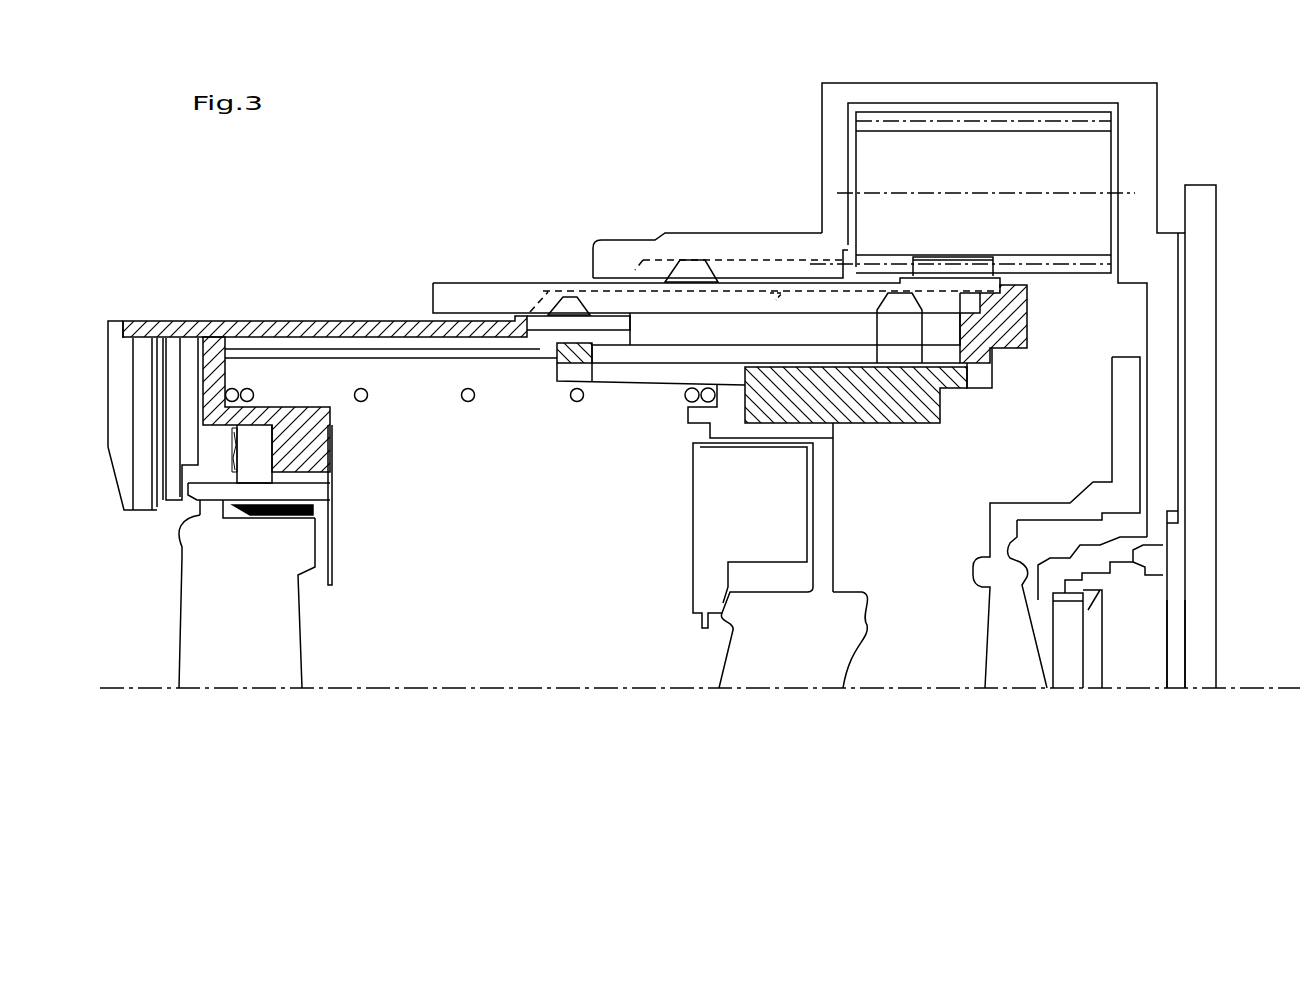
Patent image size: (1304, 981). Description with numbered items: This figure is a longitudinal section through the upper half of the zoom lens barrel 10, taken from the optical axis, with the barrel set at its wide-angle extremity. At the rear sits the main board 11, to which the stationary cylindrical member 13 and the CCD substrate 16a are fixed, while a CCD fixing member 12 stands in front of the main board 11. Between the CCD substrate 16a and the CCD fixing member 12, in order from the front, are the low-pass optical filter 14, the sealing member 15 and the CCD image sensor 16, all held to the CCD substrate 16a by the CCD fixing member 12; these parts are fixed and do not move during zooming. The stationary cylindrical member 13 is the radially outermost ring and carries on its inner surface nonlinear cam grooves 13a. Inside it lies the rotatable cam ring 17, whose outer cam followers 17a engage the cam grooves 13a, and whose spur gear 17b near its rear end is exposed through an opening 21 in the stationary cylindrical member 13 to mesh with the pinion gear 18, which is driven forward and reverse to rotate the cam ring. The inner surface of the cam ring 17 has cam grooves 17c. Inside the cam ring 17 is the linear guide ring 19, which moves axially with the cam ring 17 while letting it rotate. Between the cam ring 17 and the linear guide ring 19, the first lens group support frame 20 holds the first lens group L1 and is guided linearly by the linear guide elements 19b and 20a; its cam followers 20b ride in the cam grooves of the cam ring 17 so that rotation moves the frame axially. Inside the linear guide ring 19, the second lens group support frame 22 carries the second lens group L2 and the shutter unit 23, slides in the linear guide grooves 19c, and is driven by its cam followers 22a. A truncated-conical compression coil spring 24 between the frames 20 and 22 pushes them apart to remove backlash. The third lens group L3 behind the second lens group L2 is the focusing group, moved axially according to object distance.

The zoom lens barrel 10 is at (173, 208).
The main board 11 is at (1210, 515).
The CCD fixing member 12 is at (1188, 368).
The stationary cylindrical member 13 is at (612, 257).
The nonlinear cam groove 13a is at (657, 258).
The low-pass optical filter 14 is at (1071, 682).
The sealing member 15 is at (1088, 610).
The CCD image sensor 16 is at (1148, 667).
The CCD substrate 16a is at (1178, 663).
The rotatable cam ring 17 is at (470, 283).
The cam follower 17a is at (677, 260).
The spur gear 17b is at (975, 257).
The cam groove 17c is at (773, 292).
The pinion gear 18 is at (1097, 162).
The linear guide ring 19 is at (1020, 300).
The linear guide element 19b is at (655, 353).
The linear guide groove 19c is at (987, 373).
The first lens group support frame 20 is at (205, 332).
The linear guide element 20a is at (508, 360).
The cam follower 20b is at (567, 303).
The opening 21 is at (848, 245).
The second lens group support frame 22 is at (910, 415).
The cam follower 22a is at (912, 328).
The shutter unit 23 is at (706, 530).
The compression coil spring 24 is at (238, 393).
The first lens group L1 is at (253, 680).
The second lens group L2 is at (793, 678).
The third lens group L3 is at (1020, 673).